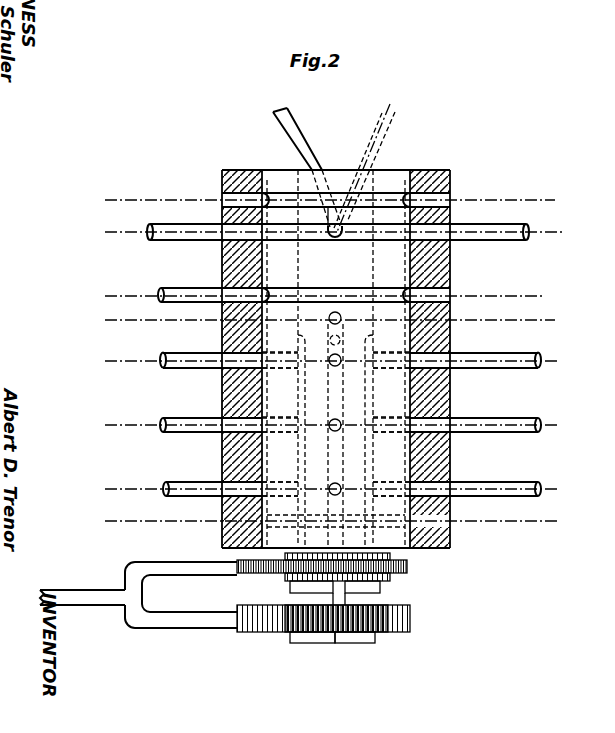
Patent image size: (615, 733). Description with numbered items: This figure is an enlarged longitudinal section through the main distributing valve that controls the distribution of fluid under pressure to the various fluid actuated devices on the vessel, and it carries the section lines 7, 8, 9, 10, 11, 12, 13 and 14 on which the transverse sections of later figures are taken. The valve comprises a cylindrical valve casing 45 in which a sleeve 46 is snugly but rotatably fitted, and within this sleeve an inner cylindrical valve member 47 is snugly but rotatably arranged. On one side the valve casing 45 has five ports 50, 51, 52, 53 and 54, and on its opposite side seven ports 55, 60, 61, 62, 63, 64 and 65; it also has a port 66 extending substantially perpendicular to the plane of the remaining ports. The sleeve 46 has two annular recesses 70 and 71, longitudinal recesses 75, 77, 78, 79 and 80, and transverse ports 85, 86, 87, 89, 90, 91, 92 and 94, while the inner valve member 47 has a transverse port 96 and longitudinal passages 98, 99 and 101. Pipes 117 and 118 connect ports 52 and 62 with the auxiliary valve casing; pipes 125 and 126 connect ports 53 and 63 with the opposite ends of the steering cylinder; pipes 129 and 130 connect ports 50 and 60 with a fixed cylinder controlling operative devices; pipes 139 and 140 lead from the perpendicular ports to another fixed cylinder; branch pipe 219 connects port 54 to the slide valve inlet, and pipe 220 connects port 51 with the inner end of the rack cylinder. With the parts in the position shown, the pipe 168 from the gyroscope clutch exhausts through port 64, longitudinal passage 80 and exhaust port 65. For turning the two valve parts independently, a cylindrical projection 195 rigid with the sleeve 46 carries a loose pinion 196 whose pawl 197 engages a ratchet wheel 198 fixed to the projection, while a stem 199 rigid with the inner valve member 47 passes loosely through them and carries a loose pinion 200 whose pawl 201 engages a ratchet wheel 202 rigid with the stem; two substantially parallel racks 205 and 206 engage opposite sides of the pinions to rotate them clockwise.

The section line 7— 7 is at (330, 200).
The section line 8— 8 is at (331, 230).
The section line 9— 9 is at (326, 295).
The section line 10— 10 is at (324, 319).
The section line 11— 11 is at (331, 360).
The section line 12— 12 is at (333, 424).
The section line 13— 13 is at (331, 489).
The section line 14— 14 is at (332, 521).
The valve casing 45 is at (437, 175).
The sleeve 46 is at (394, 178).
The inner cylindrical valve member 47 is at (306, 195).
The port 50 is at (234, 192).
The port 51 is at (232, 292).
The port 52 is at (232, 356).
The port 53 is at (232, 418).
The port 54 is at (232, 486).
The port 55 is at (452, 193).
The port 60 is at (452, 206).
The port 61 is at (451, 296).
The port 62 is at (450, 344).
The port 63 is at (450, 406).
The port 64 is at (449, 471).
The exhaust port 65 is at (452, 533).
The port 66 is at (337, 239).
The annular recess 70 is at (250, 183).
The annular recess 71 is at (445, 276).
The longitudinal recess 75 is at (345, 219).
The longitudinal recess 77 is at (403, 236).
The longitudinal recess 78 is at (270, 250).
The longitudinal recess 79 is at (268, 500).
The longitudinal passage 80 is at (378, 503).
The transverse port 85 is at (342, 320).
The transverse port 86 is at (296, 338).
The transverse port 87 is at (376, 338).
The transverse port 89 is at (340, 366).
The transverse port 90 is at (277, 453).
The transverse port 91 is at (386, 443).
The transverse port 92 is at (340, 431).
The transverse port 94 is at (335, 496).
The transverse port 96 is at (329, 319).
The longitudinal passage 98 is at (328, 409).
The longitudinal passage 99 is at (298, 395).
The longitudinal passage 101 is at (373, 396).
The pipe 117 is at (166, 354).
The pipe 118 is at (524, 353).
The pipe 125 is at (166, 418).
The pipe 126 is at (516, 418).
The pipe 129 is at (167, 225).
The pipe 130 is at (524, 225).
The pipe 139 is at (389, 114).
The pipe 140 is at (279, 111).
The pipe 168 is at (532, 484).
The cylindrical projection 195 is at (392, 556).
The pinion 196 is at (380, 586).
The pawl 197 is at (290, 586).
The ratchet wheel 198 is at (380, 592).
The stem 199 is at (288, 630).
The pinion 200 is at (390, 630).
The pawl 201 is at (300, 643).
The ratchet wheel 202 is at (360, 643).
The rack 205 is at (237, 562).
The rack 206 is at (262, 630).
The branch pipe 219 is at (167, 484).
The pipe 220 is at (165, 289).